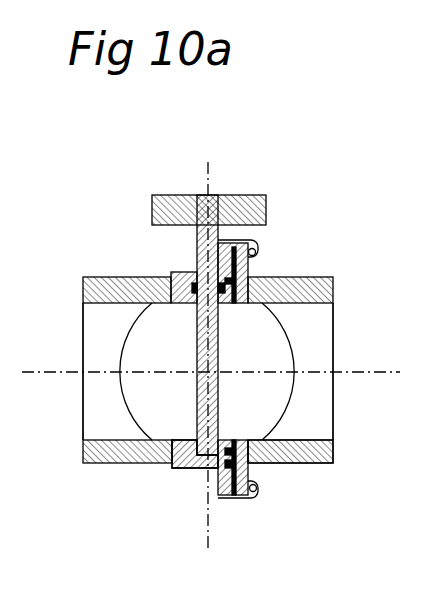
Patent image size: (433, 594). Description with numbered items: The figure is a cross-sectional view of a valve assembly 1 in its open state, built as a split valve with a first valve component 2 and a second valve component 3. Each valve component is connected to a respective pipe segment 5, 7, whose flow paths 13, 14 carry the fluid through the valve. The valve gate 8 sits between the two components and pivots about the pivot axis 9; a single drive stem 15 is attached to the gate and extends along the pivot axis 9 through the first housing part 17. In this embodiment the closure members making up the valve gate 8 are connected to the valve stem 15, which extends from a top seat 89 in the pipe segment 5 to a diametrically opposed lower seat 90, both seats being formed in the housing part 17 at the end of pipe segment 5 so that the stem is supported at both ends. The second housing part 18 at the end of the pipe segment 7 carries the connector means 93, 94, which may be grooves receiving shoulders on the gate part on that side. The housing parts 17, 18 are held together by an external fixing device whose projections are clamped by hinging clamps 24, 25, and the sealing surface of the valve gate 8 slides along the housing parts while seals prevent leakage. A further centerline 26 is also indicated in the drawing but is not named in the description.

The valve assembly 1 is at (150, 152).
The first valve component 2 is at (120, 209).
The second valve component 3 is at (386, 218).
The pipe segment 5 is at (101, 452).
The pipe segment 7 is at (320, 456).
The valve gate 8 is at (268, 350).
The pivot axis 9 is at (210, 167).
The flow path 13 is at (110, 417).
The flow path 14 is at (322, 411).
The drive stem 15 is at (197, 250).
The first housing part 17 is at (190, 471).
The second housing part 18 is at (258, 471).
The hinging clamp 24 is at (256, 250).
The hinging clamp 25 is at (250, 500).
The flow axis 26 is at (61, 371).
The top seat 89 is at (186, 288).
The lower seat 90 is at (178, 468).
The connector means 93 is at (303, 463).
The connector means 94 is at (238, 296).